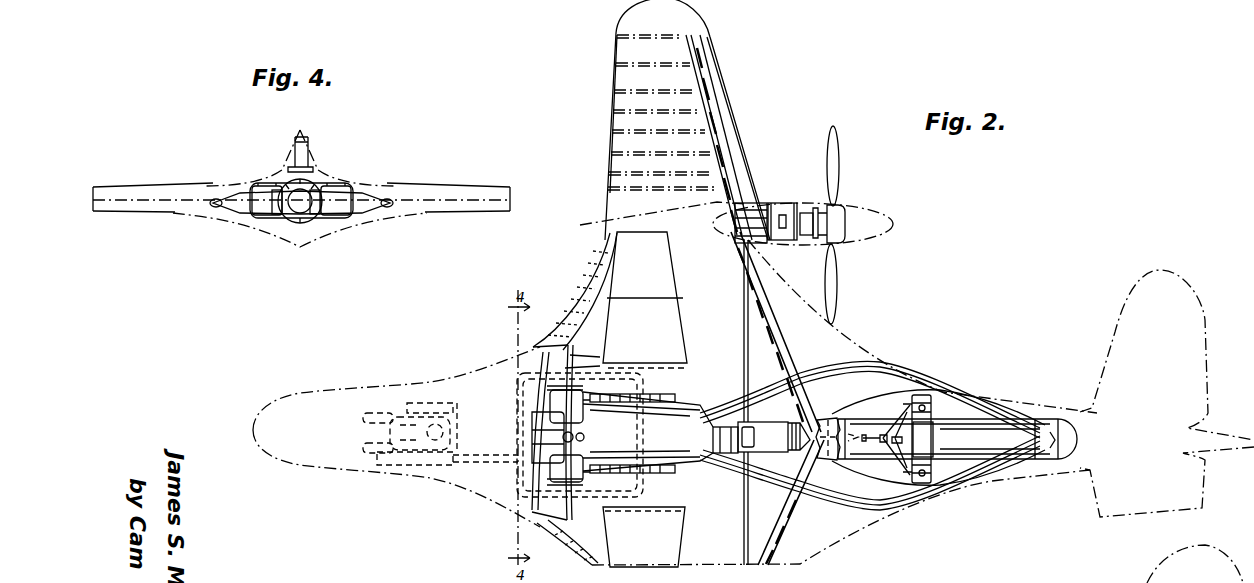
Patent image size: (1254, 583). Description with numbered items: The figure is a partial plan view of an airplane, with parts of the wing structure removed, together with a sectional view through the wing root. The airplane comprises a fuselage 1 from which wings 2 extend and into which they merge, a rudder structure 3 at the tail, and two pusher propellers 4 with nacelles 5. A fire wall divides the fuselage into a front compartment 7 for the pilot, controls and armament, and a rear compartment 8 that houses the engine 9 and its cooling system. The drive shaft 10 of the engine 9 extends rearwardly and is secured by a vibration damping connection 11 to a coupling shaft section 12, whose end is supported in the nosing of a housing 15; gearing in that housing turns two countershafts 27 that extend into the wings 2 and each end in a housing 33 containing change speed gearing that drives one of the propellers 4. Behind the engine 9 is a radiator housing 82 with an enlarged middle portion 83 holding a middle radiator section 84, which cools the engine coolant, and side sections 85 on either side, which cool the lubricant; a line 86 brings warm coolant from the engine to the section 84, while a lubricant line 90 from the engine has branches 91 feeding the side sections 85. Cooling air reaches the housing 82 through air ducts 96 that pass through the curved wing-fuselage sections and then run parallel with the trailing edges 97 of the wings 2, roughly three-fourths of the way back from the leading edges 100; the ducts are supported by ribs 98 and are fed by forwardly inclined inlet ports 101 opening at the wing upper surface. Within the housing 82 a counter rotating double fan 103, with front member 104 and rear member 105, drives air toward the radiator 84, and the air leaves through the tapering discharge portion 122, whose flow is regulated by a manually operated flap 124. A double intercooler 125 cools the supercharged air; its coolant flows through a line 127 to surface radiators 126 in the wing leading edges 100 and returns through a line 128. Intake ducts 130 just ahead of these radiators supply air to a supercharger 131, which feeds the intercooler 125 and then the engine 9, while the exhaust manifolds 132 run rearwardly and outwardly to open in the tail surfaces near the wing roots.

In FIG. 4, the fuselage 1 is at (302, 245).
In FIG. 4, the wings 2 is at (108, 184).
In FIG. 2, the wings 2 is at (615, 146).
In FIG. 2, the rudder structure 3 is at (1236, 391).
In FIG. 2, the pusher propellers 4 is at (840, 188).
In FIG. 2, the nacelles 5 is at (600, 221).
In FIG. 2, the front compartment 7 is at (461, 483).
In FIG. 2, the rear compartment 8 is at (670, 378).
In FIG. 4, the engine 9 is at (307, 232).
In FIG. 2, the engine 9 is at (670, 432).
In FIG. 2, the drive shaft 10 is at (700, 462).
In FIG. 2, the vibration damping connection 11 is at (728, 426).
In FIG. 2, the coupling shaft section 12 is at (740, 420).
In FIG. 2, the housing 15 is at (770, 420).
In FIG. 2, the countershafts 27 is at (760, 262).
In FIG. 2, the housing 33 is at (782, 204).
In FIG. 2, the housing 82 is at (868, 422).
In FIG. 2, the enlarged middle portion 83 is at (951, 443).
In FIG. 2, the middle radiator section 84 is at (950, 425).
In FIG. 2, the side radiator sections 85 is at (925, 394).
In FIG. 2, the line 86 is at (893, 420).
In FIG. 2, the lubricant line 90 is at (872, 444).
In FIG. 2, the branches 91 is at (909, 400).
In FIG. 2, the air ducts 96 is at (684, 40).
In FIG. 2, the trailing edges 97 is at (740, 112).
In FIG. 2, the webs or ribs 98 is at (631, 108).
In FIG. 2, the leading edges 100 is at (611, 121).
In FIG. 2, the inlet ports 101 is at (699, 51).
In FIG. 2, the counter rotating double fan 103 is at (836, 424).
In FIG. 2, the front fan member 104 is at (763, 437).
In FIG. 2, the rear fan member 105 is at (838, 455).
In FIG. 2, the discharge portion 122 is at (1040, 428).
In FIG. 2, the flap 124 is at (1046, 462).
In FIG. 4, the double intercooler 125 is at (265, 228).
In FIG. 2, the double intercooler 125 is at (549, 400).
In FIG. 2, the surface radiators 126 is at (577, 325).
In FIG. 2, the line 127 is at (577, 348).
In FIG. 2, the line 128 is at (570, 356).
In FIG. 4, the intake ducts 130 is at (225, 212).
In FIG. 2, the intake ducts 130 is at (535, 356).
In FIG. 4, the supercharger 131 is at (315, 175).
In FIG. 2, the supercharger 131 is at (531, 437).
In FIG. 2, the exhaust manifolds 132 is at (705, 410).